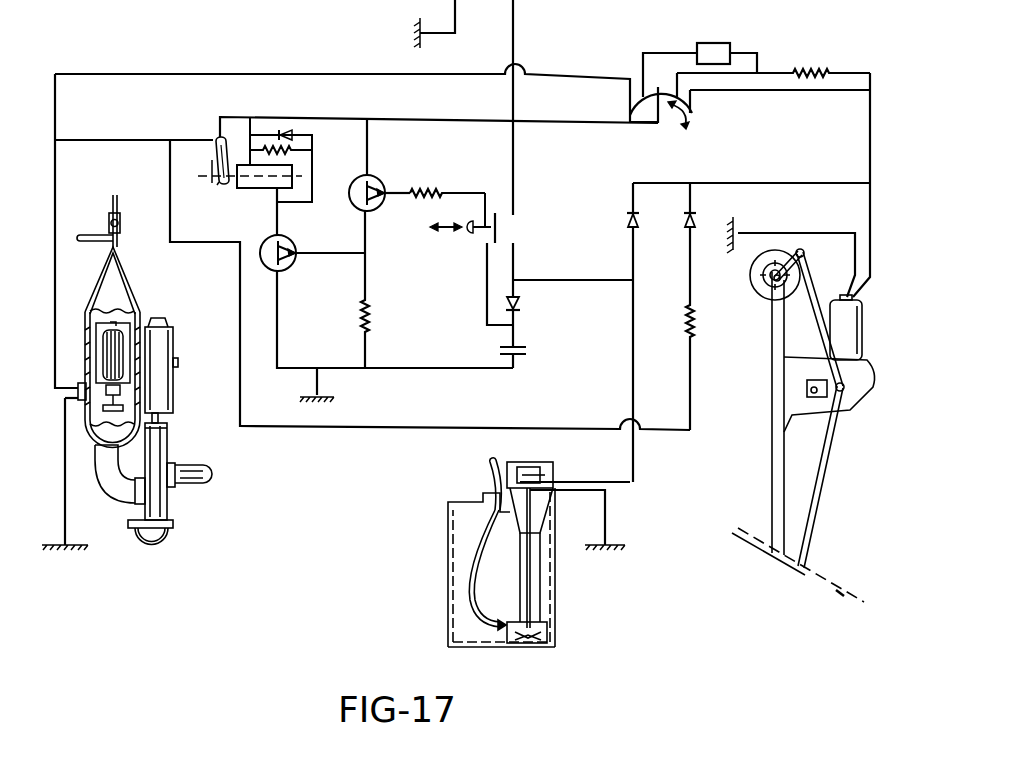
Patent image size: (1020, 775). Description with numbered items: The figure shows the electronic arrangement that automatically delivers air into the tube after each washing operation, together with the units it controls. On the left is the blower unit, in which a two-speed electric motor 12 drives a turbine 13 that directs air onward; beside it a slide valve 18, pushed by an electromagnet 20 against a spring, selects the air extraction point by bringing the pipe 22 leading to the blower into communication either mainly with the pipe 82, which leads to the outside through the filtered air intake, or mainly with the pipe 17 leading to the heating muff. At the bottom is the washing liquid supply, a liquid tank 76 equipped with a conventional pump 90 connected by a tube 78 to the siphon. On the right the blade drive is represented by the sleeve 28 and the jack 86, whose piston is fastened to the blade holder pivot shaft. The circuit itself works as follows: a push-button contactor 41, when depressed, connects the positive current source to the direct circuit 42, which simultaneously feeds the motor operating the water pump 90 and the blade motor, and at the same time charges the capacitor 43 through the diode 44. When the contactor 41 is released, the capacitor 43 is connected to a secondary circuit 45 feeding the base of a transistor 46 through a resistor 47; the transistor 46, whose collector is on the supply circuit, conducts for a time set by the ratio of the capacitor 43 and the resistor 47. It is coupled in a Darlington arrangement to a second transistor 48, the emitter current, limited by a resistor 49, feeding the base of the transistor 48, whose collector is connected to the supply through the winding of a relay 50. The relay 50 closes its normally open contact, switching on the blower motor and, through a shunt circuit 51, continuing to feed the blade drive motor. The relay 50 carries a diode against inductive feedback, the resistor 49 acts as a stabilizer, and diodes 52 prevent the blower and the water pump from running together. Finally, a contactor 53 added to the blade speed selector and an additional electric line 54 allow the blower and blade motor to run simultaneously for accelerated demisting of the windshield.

The two-speed electric motor 12 is at (110, 343).
The turbine 13 is at (95, 425).
The pipe 17 is at (197, 470).
The slide valve 18 is at (163, 450).
The electromagnet 20 is at (168, 340).
The pipe 22 is at (118, 488).
The sleeve 28 is at (758, 290).
The push-button contactor 41 is at (484, 194).
The direct circuit 42 is at (575, 279).
The capacitor 43 is at (525, 354).
The diode 44 is at (518, 305).
The secondary circuit 45 is at (462, 192).
The transistor 46 is at (358, 178).
The resistor 47 is at (427, 191).
The transistor 48 is at (260, 256).
The resistor 49 is at (367, 322).
The relay 50 is at (243, 163).
The shunt circuit 51 is at (170, 163).
The diodes 52 is at (688, 226).
The contactor 53 is at (638, 110).
The additional electric line 54 is at (563, 79).
The liquid tank 76 is at (452, 597).
The tube 78 is at (492, 470).
The pipe 82 is at (157, 510).
The jack 86 is at (850, 333).
The pump 90 is at (537, 600).